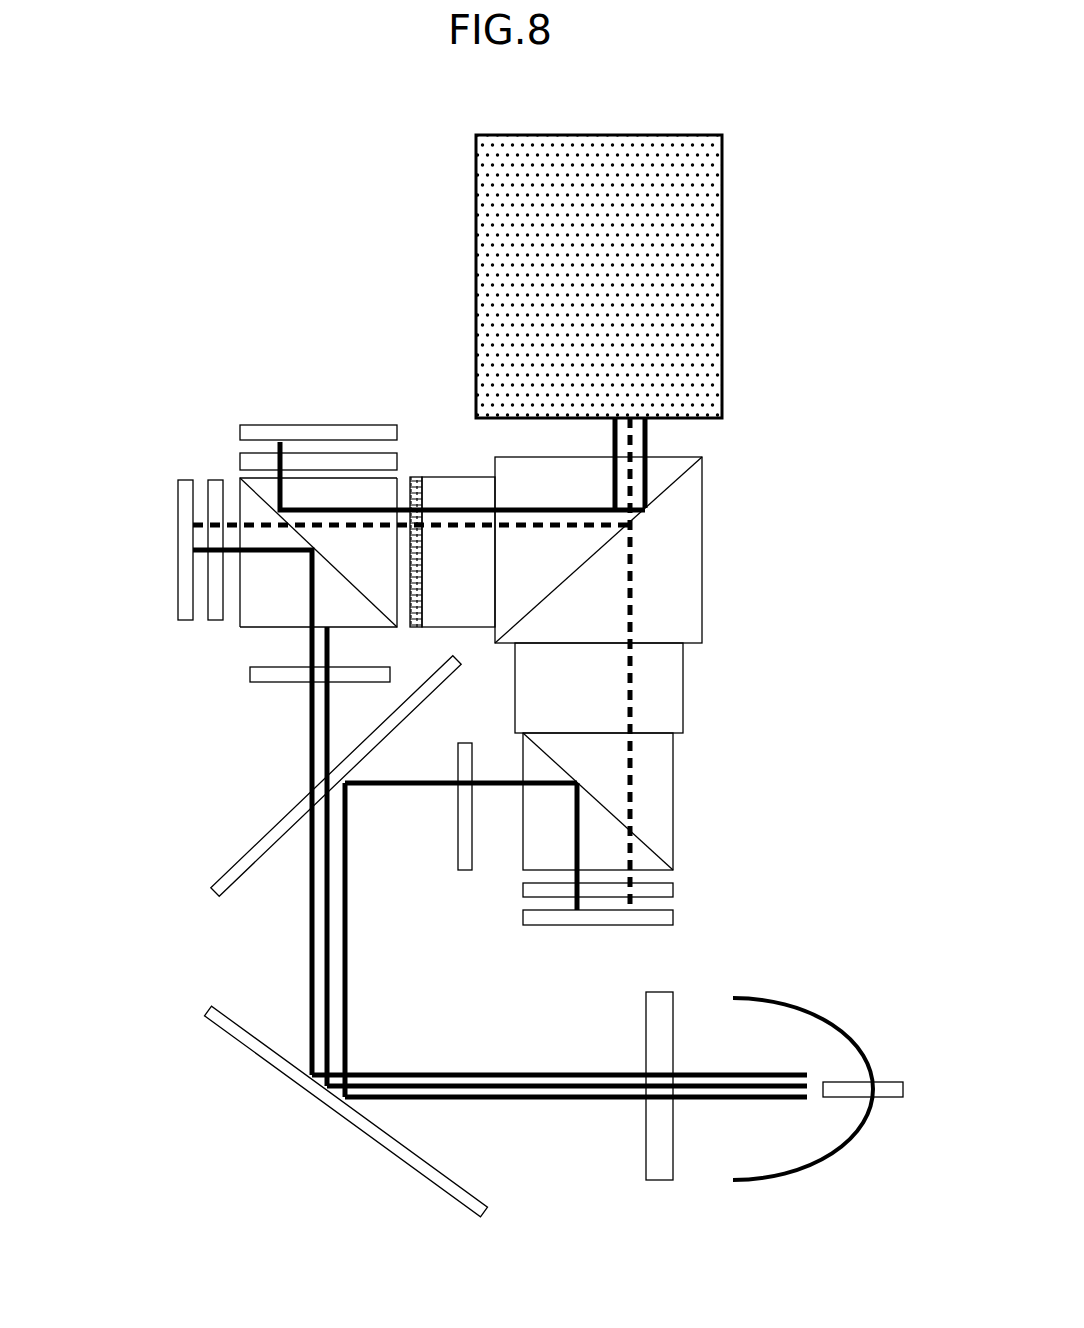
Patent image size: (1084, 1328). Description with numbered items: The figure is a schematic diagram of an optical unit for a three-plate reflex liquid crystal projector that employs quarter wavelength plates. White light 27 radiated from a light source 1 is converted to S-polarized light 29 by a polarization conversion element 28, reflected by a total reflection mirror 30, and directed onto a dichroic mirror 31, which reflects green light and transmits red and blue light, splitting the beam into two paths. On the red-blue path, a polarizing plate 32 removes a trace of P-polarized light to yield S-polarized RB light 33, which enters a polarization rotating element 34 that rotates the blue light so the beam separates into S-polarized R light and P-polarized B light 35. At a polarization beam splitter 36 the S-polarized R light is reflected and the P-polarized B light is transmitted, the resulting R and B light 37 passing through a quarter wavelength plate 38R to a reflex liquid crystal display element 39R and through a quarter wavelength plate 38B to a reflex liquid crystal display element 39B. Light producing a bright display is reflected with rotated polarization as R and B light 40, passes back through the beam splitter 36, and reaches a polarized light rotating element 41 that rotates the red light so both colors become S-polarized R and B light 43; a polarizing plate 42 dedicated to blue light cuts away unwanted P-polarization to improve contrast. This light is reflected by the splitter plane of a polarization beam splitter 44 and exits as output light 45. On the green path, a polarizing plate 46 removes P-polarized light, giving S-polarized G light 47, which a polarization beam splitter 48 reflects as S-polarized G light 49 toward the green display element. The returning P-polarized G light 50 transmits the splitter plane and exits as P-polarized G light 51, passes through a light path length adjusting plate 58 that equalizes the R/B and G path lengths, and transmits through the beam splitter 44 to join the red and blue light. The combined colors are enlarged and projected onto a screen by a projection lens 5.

The light source 1 is at (887, 1080).
The projection lens 5 is at (707, 277).
The white light 27 is at (560, 1097).
The polarization conversion element 28 is at (660, 1173).
The S-polarized light 29 is at (318, 945).
The total reflection mirror 30 is at (403, 1153).
The dichroic mirror 31 is at (245, 860).
The polarizing plate 32 is at (280, 682).
The S-polarized RB light 33 is at (300, 642).
The polarization rotating element 34 is at (247, 617).
The S-polarized R light / P-polarized B light 35 is at (330, 575).
The polarization beam splitter 36 is at (245, 492).
The S-polarized R light / P-polarized B light 37 is at (247, 557).
The quarter wavelength plate 38R is at (217, 620).
The reflex liquid crystal display element 39R is at (180, 513).
The quarter wavelength plate 38B is at (240, 457).
The reflex liquid crystal display element 39B is at (317, 428).
The P-polarized R light / S-polarized B light 40 is at (363, 505).
The polarized light rotating element 41 is at (407, 478).
The polarizing plate 42 is at (420, 493).
The S-polarized R light / S-polarized B light 43 is at (573, 527).
The polarization beam splitter 44 is at (695, 562).
The S-polarized R light / S-polarized B light / P-polarized G light 45 is at (645, 432).
The polarizing plate 46 is at (458, 848).
The S-polarized G light 47 is at (512, 777).
The polarization beam splitter 48 is at (665, 793).
The S-polarized G light 49 is at (570, 847).
The P-polarized G light 50 is at (630, 855).
The P-polarized G light 51 is at (640, 668).
The light path length adjusting plate 58 is at (673, 713).